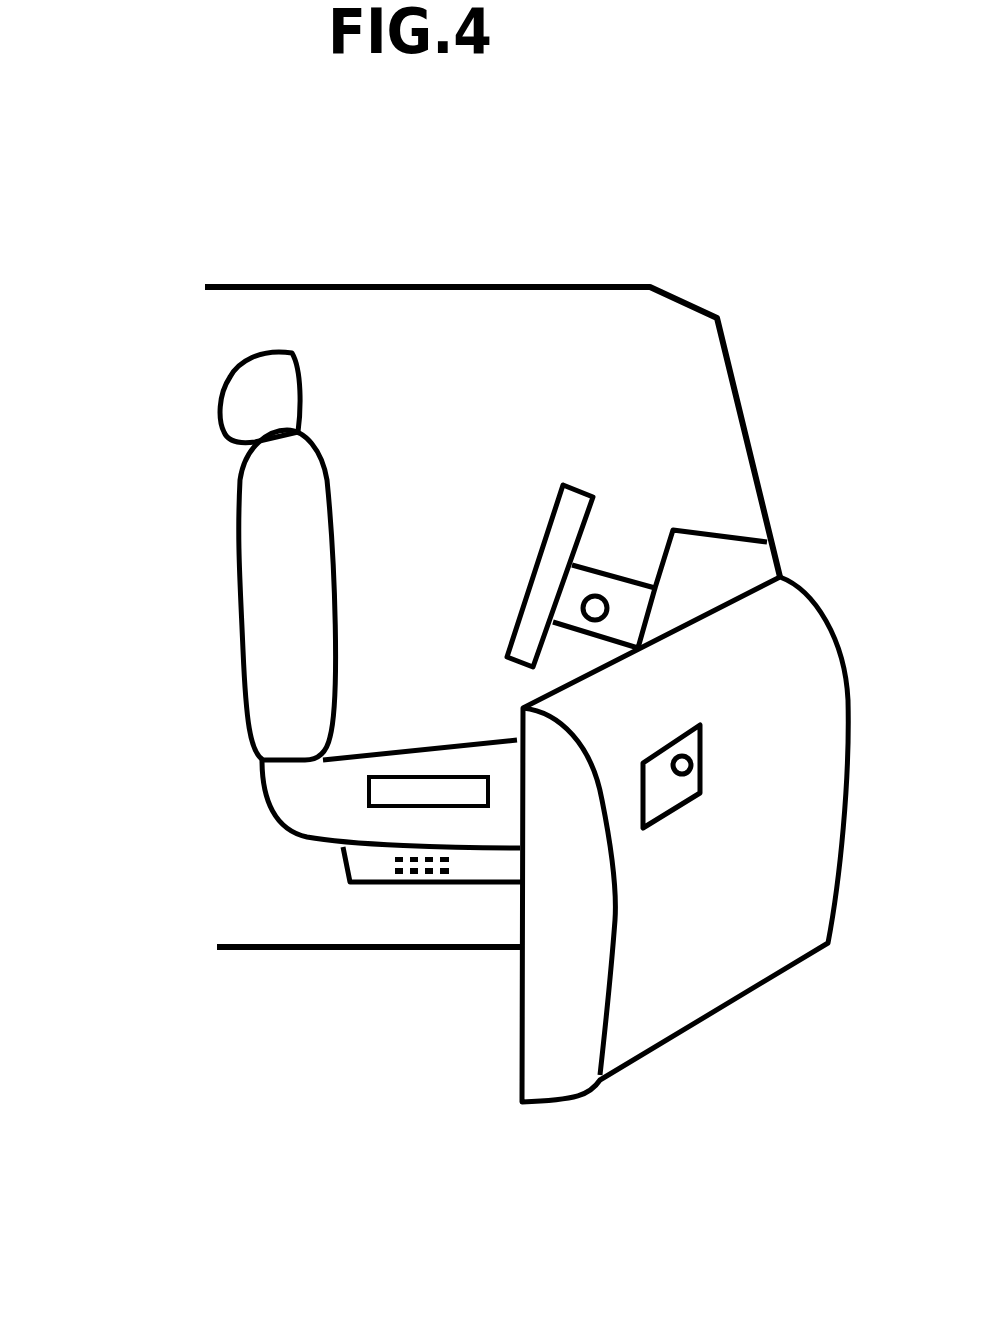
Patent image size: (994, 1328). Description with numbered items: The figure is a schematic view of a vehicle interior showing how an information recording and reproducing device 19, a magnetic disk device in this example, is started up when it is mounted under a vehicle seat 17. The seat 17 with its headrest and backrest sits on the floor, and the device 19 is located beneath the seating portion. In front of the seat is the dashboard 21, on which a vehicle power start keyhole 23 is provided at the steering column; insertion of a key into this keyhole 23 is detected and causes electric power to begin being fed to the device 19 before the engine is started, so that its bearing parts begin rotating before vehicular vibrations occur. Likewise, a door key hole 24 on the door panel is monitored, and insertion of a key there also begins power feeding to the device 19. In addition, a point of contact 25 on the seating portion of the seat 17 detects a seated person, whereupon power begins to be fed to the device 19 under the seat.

The vehicle seat 17 is at (270, 505).
The information recording and reproducing device 19 is at (407, 877).
The dashboard 21 is at (725, 542).
The vehicle power start keyhole 23 is at (598, 606).
The door key hole 24 is at (703, 780).
The point of contact 25 is at (390, 788).